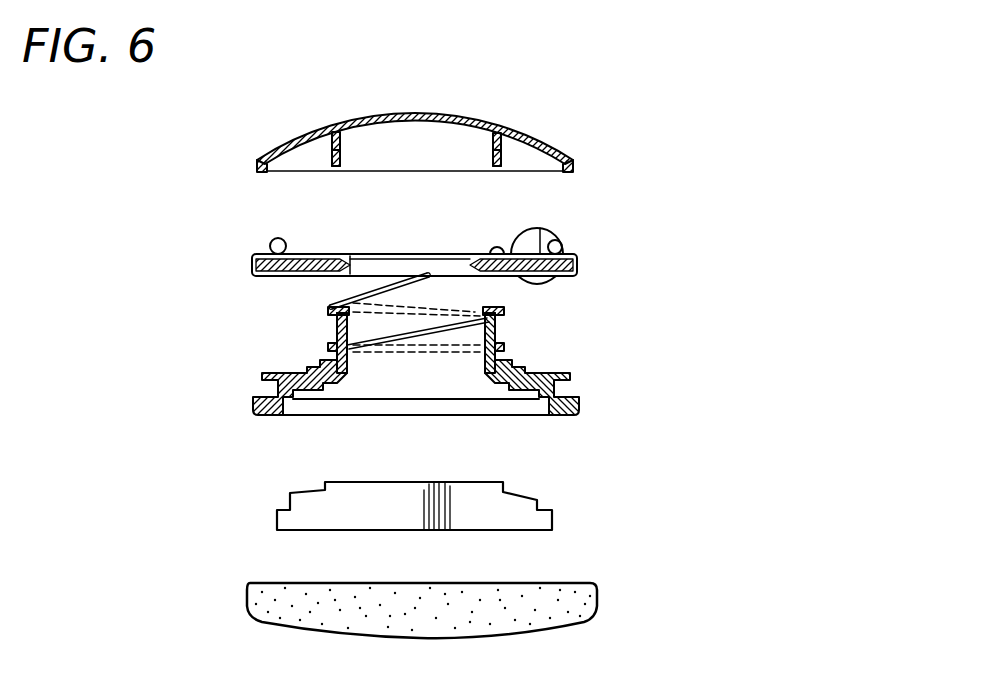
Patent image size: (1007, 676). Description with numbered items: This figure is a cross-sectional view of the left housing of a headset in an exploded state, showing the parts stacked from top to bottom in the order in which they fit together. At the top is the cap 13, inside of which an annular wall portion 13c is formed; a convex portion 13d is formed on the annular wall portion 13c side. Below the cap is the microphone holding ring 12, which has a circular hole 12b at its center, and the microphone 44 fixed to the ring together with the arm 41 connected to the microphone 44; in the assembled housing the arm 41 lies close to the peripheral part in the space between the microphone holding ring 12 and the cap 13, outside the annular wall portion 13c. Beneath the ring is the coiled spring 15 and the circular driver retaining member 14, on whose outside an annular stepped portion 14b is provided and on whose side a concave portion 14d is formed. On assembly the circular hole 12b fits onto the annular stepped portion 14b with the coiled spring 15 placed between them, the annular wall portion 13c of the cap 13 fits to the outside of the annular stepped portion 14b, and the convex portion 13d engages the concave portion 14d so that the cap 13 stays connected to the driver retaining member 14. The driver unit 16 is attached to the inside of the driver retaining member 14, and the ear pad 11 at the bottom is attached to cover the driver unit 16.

The ear pad 11 is at (595, 590).
The microphone holding ring 12 is at (580, 262).
The circular hole 12b is at (350, 258).
The cap 13 is at (539, 136).
The annular wall portion 13c is at (350, 120).
The convex portion 13d is at (341, 150).
The driver retaining member 14 is at (563, 373).
The annular stepped portion 14b is at (337, 330).
The concave portion 14d is at (336, 336).
The coiled spring 15 is at (470, 305).
The driver unit 16 is at (540, 500).
The arm 41 is at (272, 241).
The microphone 44 is at (545, 232).